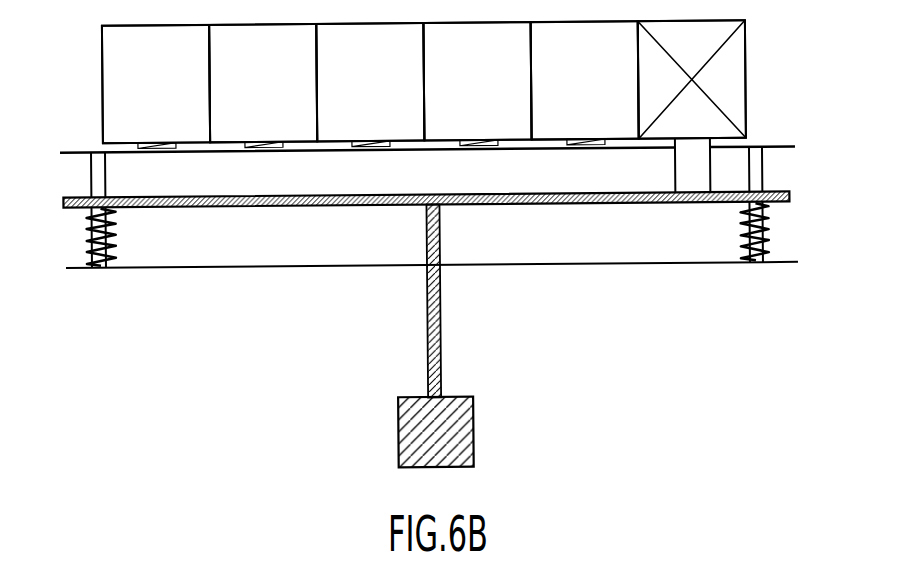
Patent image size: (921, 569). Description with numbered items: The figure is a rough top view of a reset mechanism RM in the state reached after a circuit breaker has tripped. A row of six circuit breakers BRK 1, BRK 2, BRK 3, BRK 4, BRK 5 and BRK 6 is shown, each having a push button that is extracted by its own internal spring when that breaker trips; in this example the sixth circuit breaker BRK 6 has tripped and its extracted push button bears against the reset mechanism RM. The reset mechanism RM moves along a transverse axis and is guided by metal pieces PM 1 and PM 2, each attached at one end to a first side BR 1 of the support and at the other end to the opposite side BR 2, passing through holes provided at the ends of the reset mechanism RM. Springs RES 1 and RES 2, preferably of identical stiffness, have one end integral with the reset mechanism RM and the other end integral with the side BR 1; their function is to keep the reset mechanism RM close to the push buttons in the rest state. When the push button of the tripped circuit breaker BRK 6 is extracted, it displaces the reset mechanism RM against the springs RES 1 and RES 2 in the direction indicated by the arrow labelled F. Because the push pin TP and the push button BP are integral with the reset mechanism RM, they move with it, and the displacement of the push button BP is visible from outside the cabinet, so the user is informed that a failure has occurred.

The circuit breaker BRK 1 is at (156, 84).
The circuit breaker BRK 2 is at (263, 83).
The circuit breaker BRK 3 is at (370, 82).
The circuit breaker BRK 4 is at (477, 81).
The circuit breaker BRK 5 is at (585, 80).
The circuit breaker BRK 6 is at (692, 79).
The side of the support BR 1 is at (773, 147).
The side of the support BR 2 is at (722, 265).
The spring RES 1 is at (88, 229).
The spring RES 2 is at (762, 251).
The metal piece PM 1 is at (88, 258).
The metal piece PM 2 is at (765, 225).
The reset mechanism RM is at (790, 197).
The push pin TP is at (442, 330).
The push button BP is at (474, 437).
The applied force F is at (826, 137).